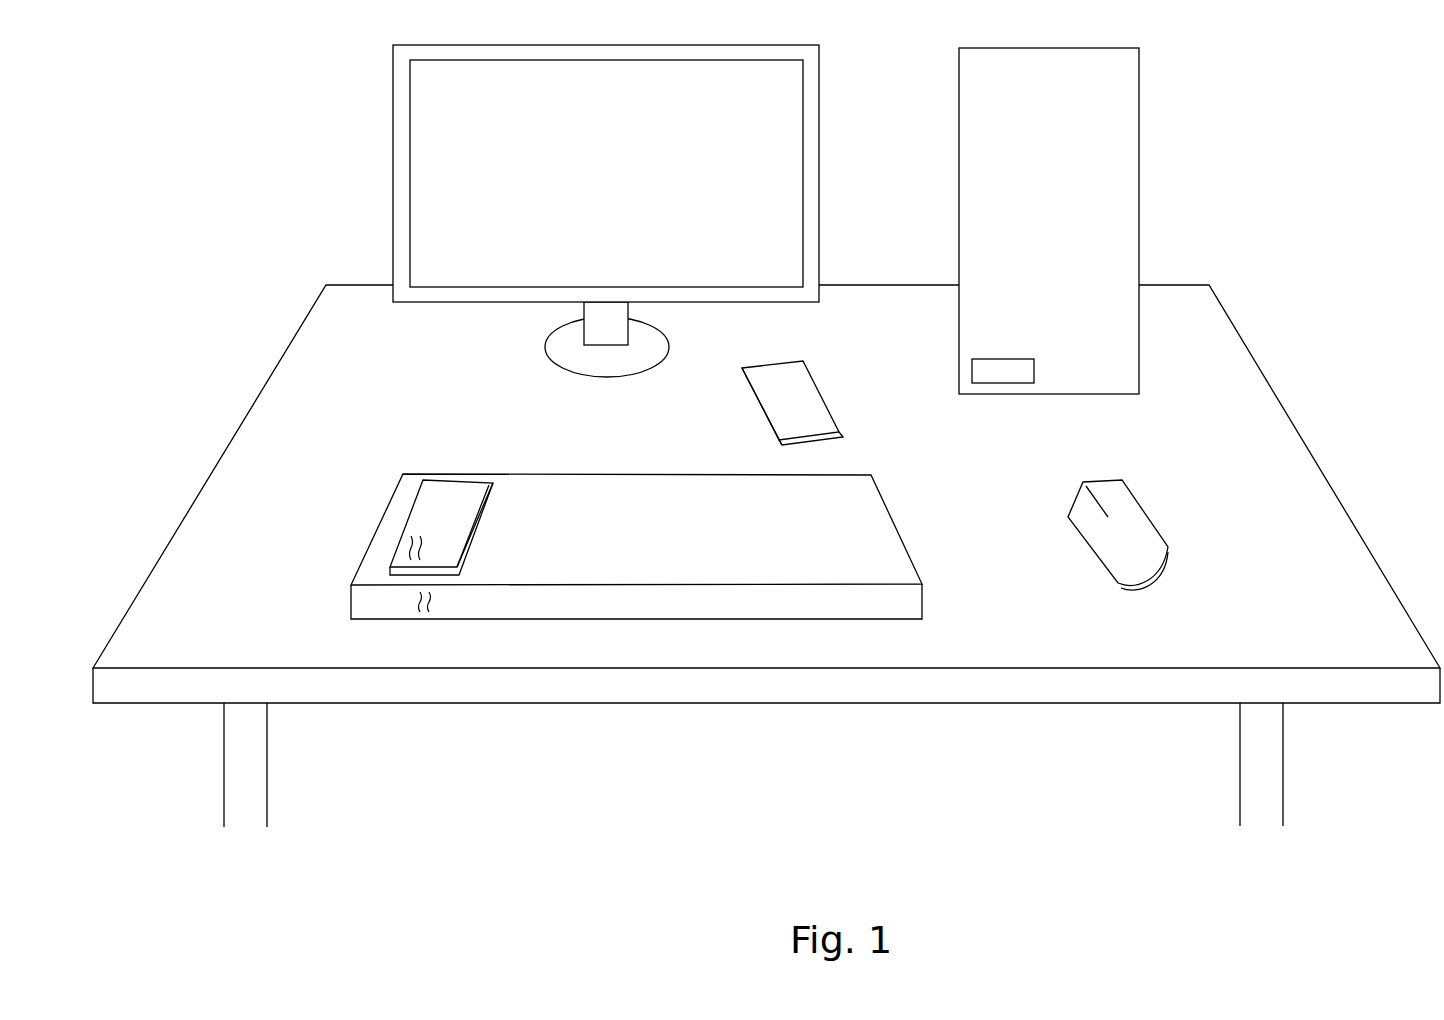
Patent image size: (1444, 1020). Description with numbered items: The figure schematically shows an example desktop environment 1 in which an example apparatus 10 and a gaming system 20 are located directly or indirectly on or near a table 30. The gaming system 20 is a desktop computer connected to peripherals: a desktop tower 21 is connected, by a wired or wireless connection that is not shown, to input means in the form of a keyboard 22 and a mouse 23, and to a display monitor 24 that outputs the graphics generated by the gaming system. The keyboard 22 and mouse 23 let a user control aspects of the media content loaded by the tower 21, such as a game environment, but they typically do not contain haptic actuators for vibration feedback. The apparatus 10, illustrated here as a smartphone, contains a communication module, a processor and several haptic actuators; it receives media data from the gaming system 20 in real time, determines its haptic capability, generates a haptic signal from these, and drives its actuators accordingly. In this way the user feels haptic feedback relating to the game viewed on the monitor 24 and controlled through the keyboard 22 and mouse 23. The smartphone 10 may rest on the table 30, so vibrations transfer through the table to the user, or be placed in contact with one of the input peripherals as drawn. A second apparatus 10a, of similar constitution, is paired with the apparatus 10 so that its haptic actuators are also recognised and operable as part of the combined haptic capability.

The desktop environment 1 is at (200, 104).
The apparatus 10 is at (445, 503).
The second apparatus 10a is at (812, 410).
The gaming system 20 is at (1177, 144).
The desktop tower 21 is at (1063, 214).
The keyboard 22 is at (662, 544).
The mouse 23 is at (1143, 512).
The display monitor 24 is at (620, 193).
The table 30 is at (268, 478).